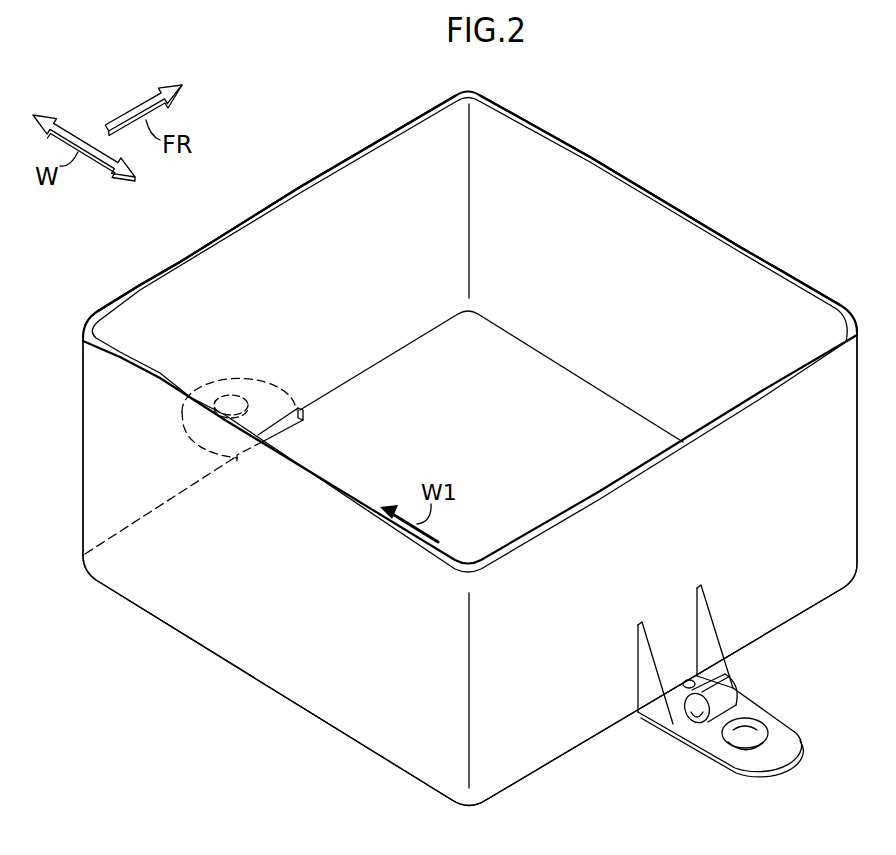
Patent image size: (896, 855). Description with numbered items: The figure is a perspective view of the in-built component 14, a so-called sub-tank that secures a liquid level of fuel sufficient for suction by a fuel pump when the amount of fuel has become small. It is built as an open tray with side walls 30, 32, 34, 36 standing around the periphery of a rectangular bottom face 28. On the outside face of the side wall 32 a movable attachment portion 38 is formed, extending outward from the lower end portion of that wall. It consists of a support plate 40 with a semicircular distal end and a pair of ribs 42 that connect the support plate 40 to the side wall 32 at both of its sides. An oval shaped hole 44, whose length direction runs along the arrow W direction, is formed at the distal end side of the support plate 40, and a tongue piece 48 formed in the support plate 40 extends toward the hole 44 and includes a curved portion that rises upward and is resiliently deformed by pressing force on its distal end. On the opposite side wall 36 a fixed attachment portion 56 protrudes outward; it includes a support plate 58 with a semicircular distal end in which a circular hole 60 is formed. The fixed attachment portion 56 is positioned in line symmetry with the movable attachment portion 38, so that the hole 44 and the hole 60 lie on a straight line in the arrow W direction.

The in-built component 14 is at (636, 142).
The bottom face 28 is at (467, 437).
The side wall 30 is at (264, 664).
The side wall 32 is at (813, 578).
The side wall 34 is at (680, 215).
The side wall 36 is at (293, 190).
The movable attachment portion 38 is at (720, 688).
The support plate 40 is at (752, 705).
The ribs 42 is at (712, 610).
The hole 44 is at (760, 745).
The tongue piece 48 is at (703, 682).
The fixed attachment portion 56 is at (207, 380).
The support plate 58 is at (272, 407).
The hole 60 is at (229, 396).